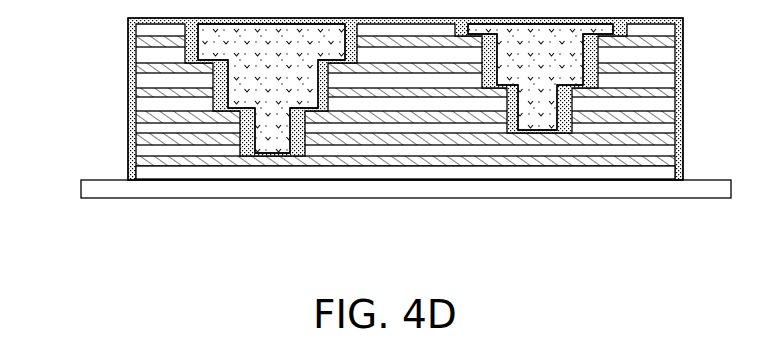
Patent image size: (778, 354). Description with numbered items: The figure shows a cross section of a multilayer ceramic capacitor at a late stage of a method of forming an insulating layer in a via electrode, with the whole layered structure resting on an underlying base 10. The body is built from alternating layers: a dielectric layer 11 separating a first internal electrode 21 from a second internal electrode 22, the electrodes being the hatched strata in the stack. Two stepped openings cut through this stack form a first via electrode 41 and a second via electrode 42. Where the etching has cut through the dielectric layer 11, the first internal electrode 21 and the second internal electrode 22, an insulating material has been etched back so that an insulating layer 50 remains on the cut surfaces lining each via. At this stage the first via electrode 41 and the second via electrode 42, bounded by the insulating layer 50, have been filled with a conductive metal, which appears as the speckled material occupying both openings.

The substrate 10 is at (100, 192).
The dielectric layer 11 is at (126, 178).
The first internal electrode 21 is at (128, 161).
The second internal electrode 22 is at (128, 138).
The first via electrode 41 is at (273, 148).
The second via electrode 42 is at (543, 132).
The insulating layer 50 is at (515, 130).